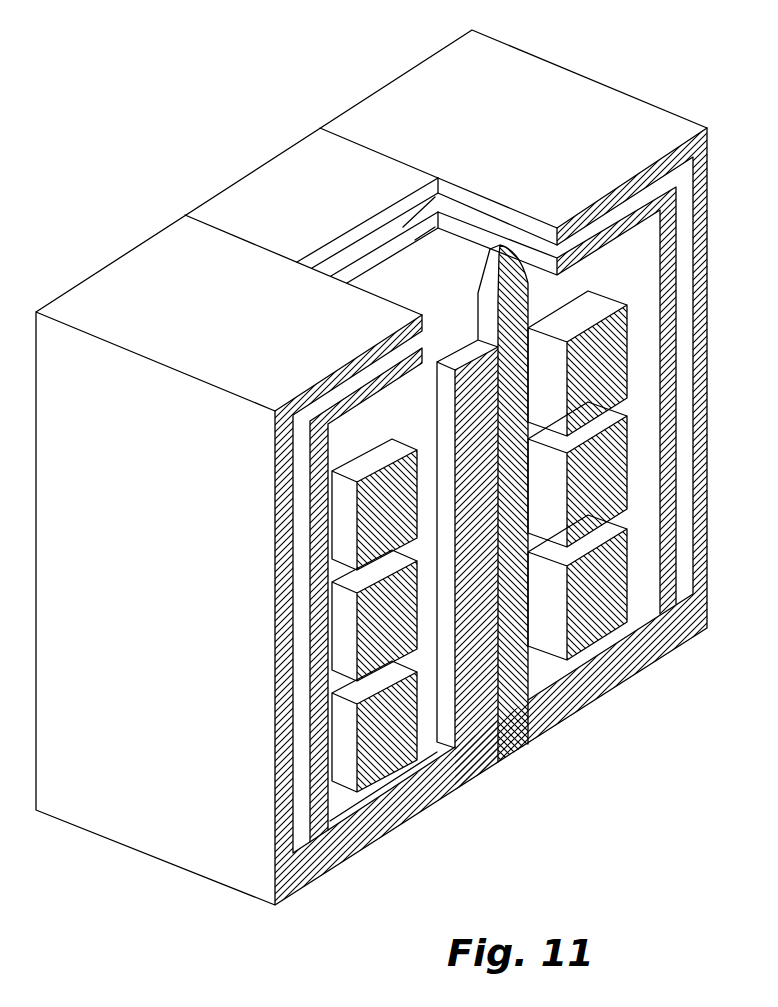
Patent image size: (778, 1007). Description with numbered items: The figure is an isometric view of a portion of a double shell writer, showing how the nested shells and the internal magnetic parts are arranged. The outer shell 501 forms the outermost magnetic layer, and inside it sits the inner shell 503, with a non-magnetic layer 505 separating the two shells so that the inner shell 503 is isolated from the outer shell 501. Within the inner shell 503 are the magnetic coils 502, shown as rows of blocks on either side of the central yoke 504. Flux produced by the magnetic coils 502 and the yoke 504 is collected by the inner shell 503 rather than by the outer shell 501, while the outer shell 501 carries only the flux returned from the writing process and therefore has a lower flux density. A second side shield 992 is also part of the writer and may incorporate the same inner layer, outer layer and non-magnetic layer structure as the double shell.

The second side shield 992 is at (297, 192).
The outer shell 501 is at (470, 193).
The inner shell 503 is at (440, 176).
The non-magnetic layer 505 is at (440, 211).
The magnetic coils 502 is at (405, 740).
The yoke 504 is at (515, 718).